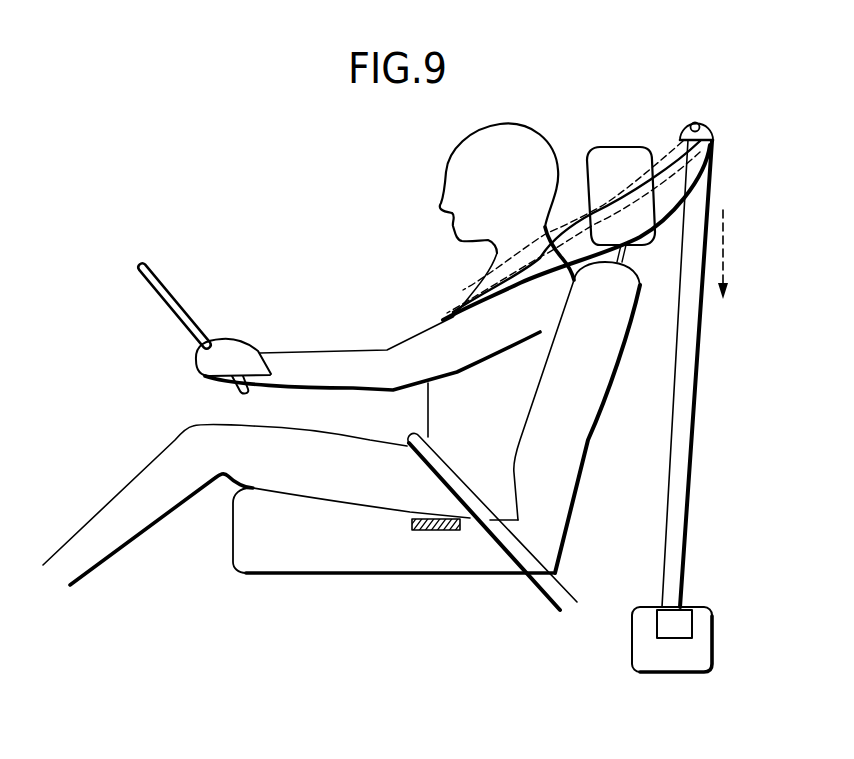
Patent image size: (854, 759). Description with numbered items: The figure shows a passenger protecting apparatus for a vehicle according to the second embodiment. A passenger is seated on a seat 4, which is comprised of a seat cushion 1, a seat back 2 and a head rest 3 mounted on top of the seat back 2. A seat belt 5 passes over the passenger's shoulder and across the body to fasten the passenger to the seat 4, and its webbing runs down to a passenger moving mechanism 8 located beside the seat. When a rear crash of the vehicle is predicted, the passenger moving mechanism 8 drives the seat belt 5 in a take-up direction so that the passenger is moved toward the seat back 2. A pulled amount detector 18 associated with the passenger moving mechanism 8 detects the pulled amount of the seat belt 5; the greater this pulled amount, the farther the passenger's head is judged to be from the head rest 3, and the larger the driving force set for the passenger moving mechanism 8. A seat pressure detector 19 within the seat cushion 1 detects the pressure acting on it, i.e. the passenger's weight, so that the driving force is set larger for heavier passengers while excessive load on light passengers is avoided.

The seat cushion 1 is at (333, 560).
The seat back 2 is at (593, 431).
The head rest 3 is at (617, 147).
The seat 4 is at (590, 505).
The seat belt 5 is at (698, 360).
The passenger moving mechanism 8 is at (712, 660).
The pulled amount detector 18 is at (683, 622).
The seat pressure detector 19 is at (433, 530).